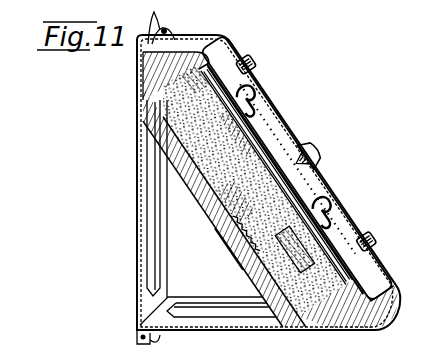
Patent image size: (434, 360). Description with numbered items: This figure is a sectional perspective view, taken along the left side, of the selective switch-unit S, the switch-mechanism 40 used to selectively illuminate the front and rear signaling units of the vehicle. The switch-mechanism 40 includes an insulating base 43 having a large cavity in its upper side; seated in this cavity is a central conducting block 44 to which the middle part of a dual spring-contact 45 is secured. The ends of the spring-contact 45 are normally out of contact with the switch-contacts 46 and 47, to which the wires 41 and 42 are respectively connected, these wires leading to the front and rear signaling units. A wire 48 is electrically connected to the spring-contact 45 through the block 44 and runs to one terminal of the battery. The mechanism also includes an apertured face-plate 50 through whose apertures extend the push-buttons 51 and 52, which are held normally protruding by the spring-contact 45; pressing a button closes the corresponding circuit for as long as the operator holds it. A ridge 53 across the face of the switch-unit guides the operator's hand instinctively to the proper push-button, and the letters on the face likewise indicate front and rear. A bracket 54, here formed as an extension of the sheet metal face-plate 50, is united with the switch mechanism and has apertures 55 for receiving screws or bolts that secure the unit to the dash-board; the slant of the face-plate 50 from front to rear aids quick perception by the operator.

The selective switch-mechanism 40 is at (329, 171).
The wire 41 is at (283, 331).
The wire 42 is at (180, 172).
The insulating base 43 is at (287, 270).
The central conducting block 44 is at (220, 200).
The dual spring-contact 45 is at (312, 228).
The switch-contact 46 is at (297, 254).
The switch-contact 47 is at (197, 89).
The wire 48 is at (232, 250).
The apertured face-plate 50 is at (284, 129).
The push-button 51 is at (374, 243).
The push-button 52 is at (248, 68).
The ridge 53 is at (320, 145).
The bracket 54 is at (161, 288).
The apertures 55 is at (168, 30).
The selective switch-unit S is at (257, 253).